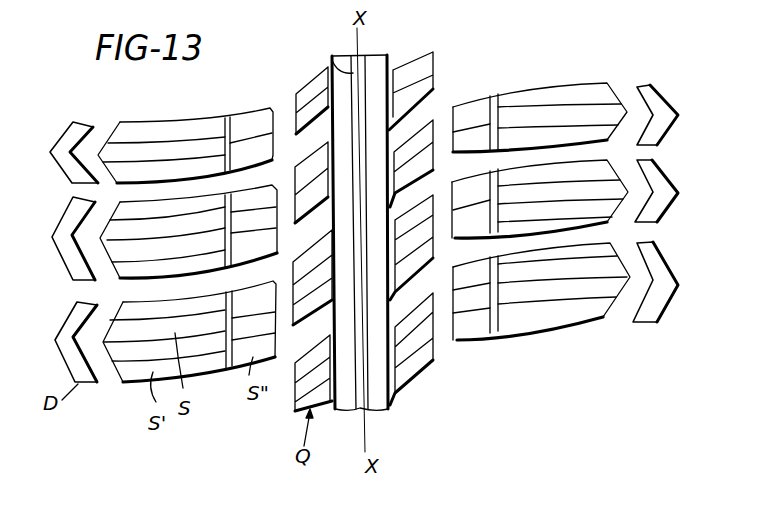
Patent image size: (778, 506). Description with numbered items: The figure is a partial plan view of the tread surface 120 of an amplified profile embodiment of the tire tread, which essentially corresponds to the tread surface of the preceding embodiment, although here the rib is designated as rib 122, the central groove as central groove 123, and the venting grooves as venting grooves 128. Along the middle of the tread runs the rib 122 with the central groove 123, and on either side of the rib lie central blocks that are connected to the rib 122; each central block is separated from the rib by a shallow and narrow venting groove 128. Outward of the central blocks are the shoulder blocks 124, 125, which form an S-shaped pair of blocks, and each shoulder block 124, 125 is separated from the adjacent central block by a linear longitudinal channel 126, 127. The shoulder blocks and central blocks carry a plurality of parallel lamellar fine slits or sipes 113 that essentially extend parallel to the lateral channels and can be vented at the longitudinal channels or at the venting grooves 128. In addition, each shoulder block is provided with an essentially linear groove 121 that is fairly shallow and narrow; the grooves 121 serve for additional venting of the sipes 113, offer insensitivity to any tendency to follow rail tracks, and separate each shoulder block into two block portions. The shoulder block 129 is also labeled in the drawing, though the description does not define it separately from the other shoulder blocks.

The sipes 113 is at (567, 107).
The tread surface 120 is at (473, 60).
The linear groove 121 is at (222, 125).
The rib 122 is at (378, 62).
The central groove 123 is at (333, 56).
The shoulder block 124 is at (125, 352).
The shoulder block 125 is at (580, 295).
The linear longitudinal channel 126 is at (286, 327).
The linear longitudinal channel 127 is at (443, 328).
The venting groove 128 is at (328, 150).
The shoulder block 129 is at (153, 160).